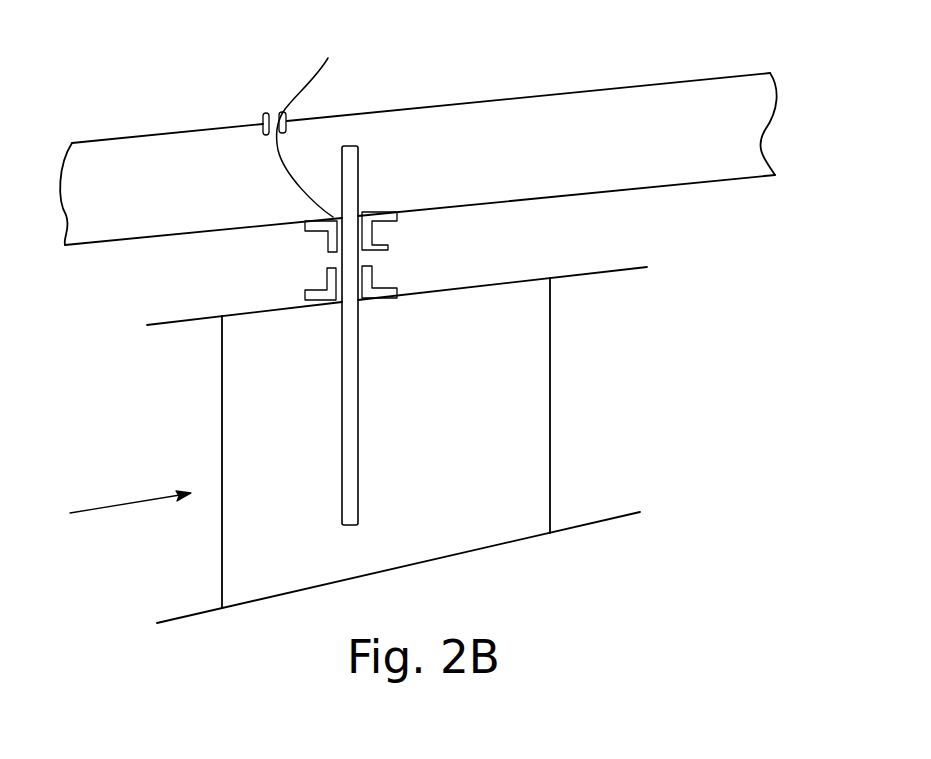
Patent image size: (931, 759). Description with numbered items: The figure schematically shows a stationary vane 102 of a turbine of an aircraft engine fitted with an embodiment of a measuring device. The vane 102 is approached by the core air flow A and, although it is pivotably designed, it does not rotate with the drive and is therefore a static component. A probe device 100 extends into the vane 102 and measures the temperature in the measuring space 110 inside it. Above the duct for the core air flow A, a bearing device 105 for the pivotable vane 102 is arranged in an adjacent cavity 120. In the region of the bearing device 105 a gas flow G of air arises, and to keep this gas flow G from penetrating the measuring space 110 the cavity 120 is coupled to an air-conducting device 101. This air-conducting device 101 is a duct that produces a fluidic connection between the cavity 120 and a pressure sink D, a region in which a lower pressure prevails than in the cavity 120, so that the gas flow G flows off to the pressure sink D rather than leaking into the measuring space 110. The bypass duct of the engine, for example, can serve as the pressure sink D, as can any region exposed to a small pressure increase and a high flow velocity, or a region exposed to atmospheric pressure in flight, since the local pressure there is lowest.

The probe device 100 is at (348, 360).
The air-conducting device 101 is at (312, 122).
The stationary vane 102 is at (551, 305).
The bearing device 105 is at (374, 192).
The measuring space 110 is at (498, 447).
The cavity 120 is at (635, 250).
The pressure sink D is at (279, 58).
The gas flow G is at (337, 255).
The core air flow A is at (119, 510).